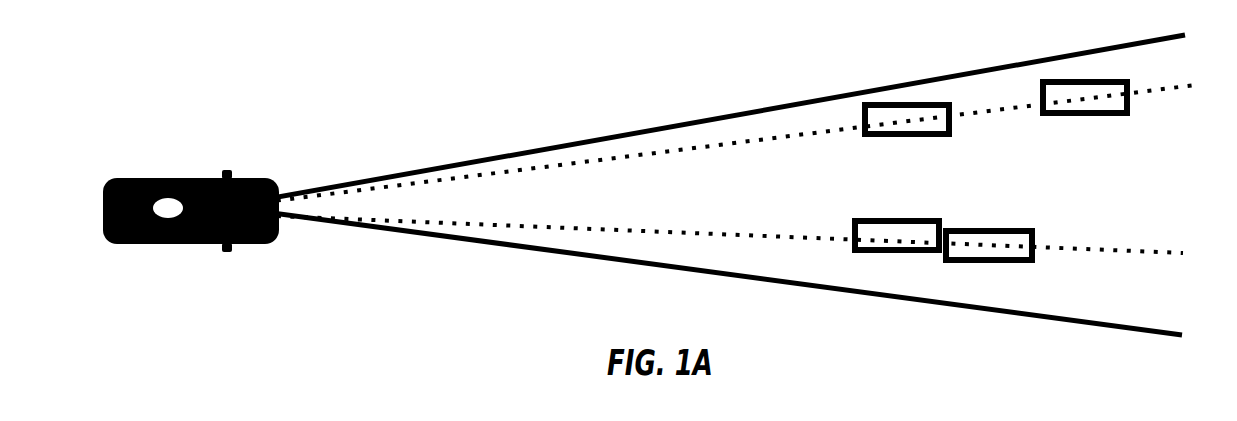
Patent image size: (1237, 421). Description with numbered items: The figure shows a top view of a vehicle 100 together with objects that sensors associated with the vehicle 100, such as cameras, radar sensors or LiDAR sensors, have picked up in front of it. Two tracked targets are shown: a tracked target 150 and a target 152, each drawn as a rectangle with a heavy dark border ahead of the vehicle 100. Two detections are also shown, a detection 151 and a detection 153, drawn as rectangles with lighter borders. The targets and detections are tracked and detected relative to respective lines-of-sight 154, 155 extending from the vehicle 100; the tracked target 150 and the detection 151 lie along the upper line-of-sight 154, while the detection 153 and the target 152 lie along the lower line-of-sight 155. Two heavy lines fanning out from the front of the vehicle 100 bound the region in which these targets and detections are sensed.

The vehicle 100 is at (143, 178).
The tracked target 150 is at (902, 102).
The detection 151 is at (1070, 80).
The target 152 is at (993, 228).
The detection 153 is at (860, 220).
The line-of-sight 154 is at (730, 140).
The line-of-sight 155 is at (733, 232).